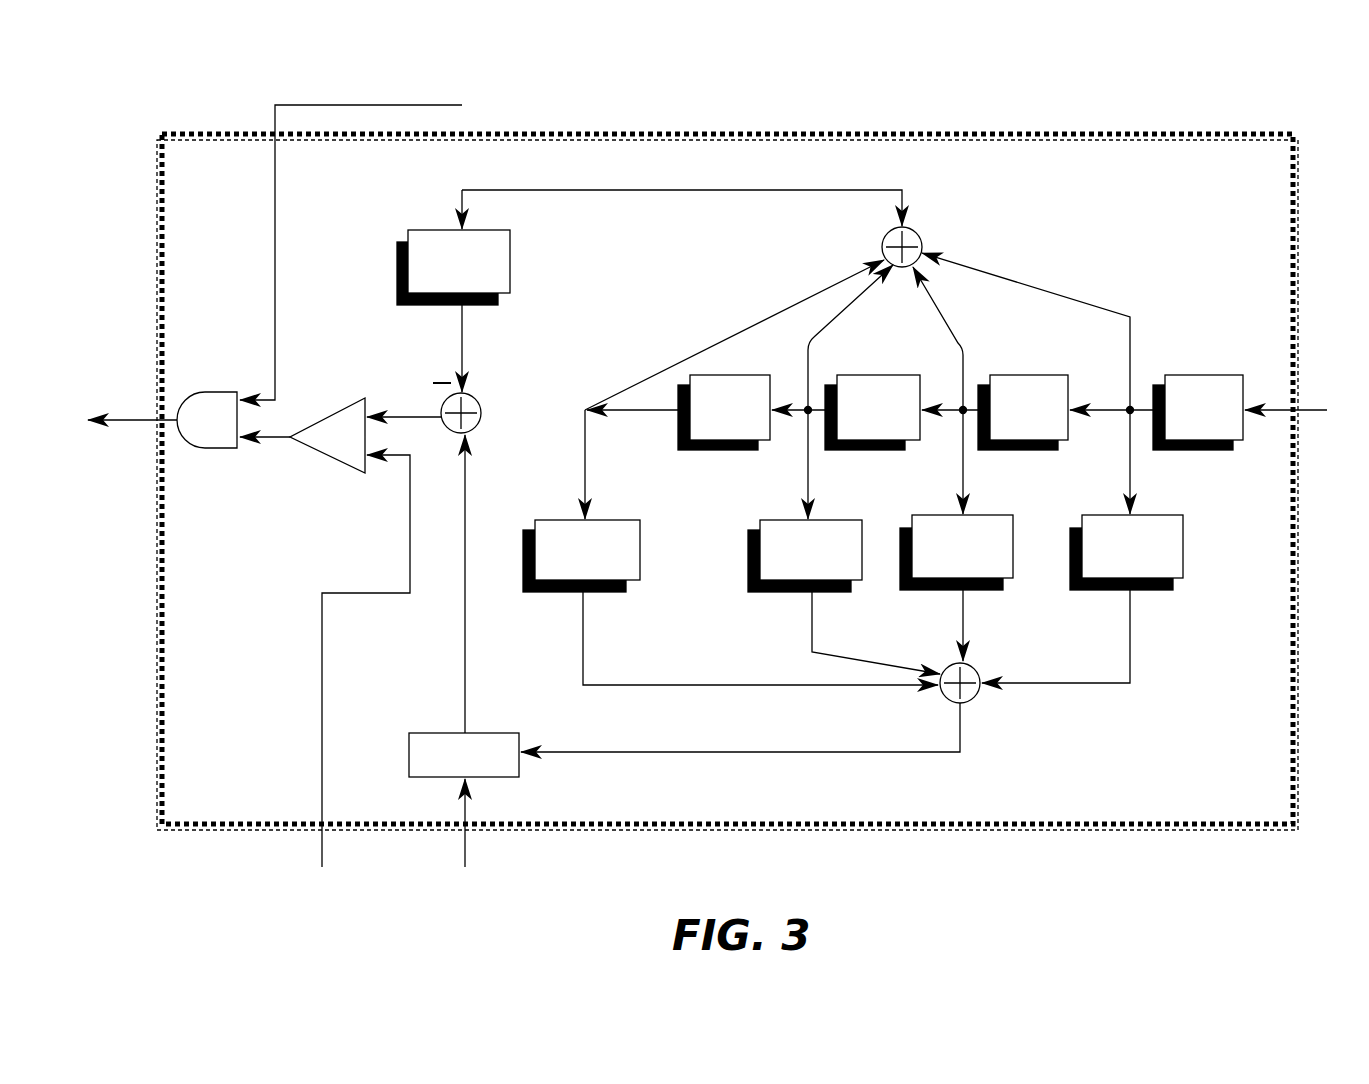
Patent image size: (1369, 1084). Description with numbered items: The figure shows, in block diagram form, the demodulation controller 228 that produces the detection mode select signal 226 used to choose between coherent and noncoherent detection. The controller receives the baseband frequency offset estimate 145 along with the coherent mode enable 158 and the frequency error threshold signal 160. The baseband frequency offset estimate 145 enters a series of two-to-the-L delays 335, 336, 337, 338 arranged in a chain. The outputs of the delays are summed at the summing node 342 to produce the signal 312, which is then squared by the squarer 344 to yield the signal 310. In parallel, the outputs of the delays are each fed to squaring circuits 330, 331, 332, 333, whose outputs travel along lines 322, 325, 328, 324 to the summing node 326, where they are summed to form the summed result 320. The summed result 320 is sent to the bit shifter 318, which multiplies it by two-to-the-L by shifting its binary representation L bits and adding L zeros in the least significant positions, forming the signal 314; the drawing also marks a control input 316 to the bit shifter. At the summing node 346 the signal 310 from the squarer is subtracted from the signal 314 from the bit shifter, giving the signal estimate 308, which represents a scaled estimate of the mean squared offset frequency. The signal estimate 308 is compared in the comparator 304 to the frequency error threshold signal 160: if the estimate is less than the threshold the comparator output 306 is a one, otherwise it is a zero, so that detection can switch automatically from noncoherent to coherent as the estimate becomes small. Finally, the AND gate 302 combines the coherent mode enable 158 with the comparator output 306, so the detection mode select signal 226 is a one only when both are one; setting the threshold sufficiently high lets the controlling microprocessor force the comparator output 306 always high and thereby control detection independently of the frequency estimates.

The demodulation controller 228 is at (905, 134).
The coherent mode enable 158 is at (275, 215).
The AND gate 302 is at (212, 448).
The detection mode select signal 226 is at (137, 421).
The comparator 304 is at (325, 458).
The comparator output 306 is at (270, 437).
The frequency error threshold signal 160 is at (339, 686).
The signal estimate 308 is at (400, 413).
The summing node 346 is at (482, 413).
The summed delay output signal 312 is at (845, 190).
The squarer 344 is at (512, 252).
The squarer output signal 310 is at (462, 345).
The summing node 342 is at (922, 240).
The baseband frequency offset estimate 145 is at (1306, 407).
The delay 335 is at (712, 375).
The delay 336 is at (855, 375).
The delay 337 is at (1005, 375).
The delay 338 is at (1220, 375).
The squaring circuit 330 is at (640, 567).
The squaring circuit 331 is at (825, 520).
The squaring circuit 332 is at (993, 515).
The squaring circuit 333 is at (1183, 565).
The squared output line 322 is at (620, 685).
The squared output line 325 is at (812, 618).
The squared output line 328 is at (963, 625).
The squared output line 324 is at (1040, 683).
The summing node 326 is at (975, 698).
The summed result 320 is at (815, 752).
The bit shifter 318 is at (440, 733).
The bit shifter output signal 314 is at (465, 630).
The bit shifter 316 is at (460, 832).